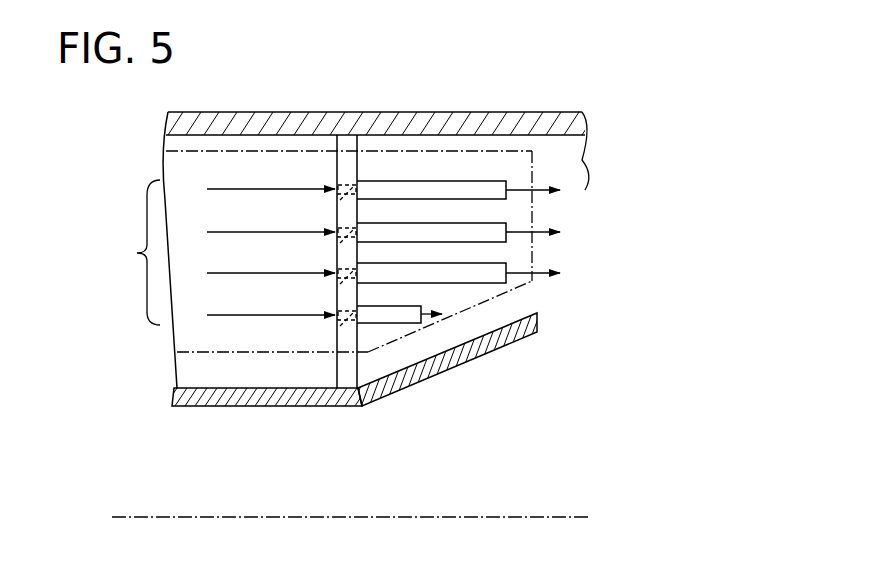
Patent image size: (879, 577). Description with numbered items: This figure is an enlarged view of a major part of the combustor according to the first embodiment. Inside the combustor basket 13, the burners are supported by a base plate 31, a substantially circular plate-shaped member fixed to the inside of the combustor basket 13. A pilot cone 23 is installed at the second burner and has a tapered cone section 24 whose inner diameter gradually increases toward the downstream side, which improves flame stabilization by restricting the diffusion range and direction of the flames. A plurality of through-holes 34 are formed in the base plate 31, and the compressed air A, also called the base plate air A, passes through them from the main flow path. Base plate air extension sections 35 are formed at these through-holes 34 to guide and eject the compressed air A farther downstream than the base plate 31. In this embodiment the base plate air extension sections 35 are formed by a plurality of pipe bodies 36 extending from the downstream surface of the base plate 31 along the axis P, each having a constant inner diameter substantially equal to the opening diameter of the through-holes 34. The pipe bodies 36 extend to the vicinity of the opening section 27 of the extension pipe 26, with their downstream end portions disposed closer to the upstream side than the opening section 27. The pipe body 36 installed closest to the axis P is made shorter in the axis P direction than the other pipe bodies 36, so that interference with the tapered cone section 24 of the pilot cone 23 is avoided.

The combustor basket 13 is at (390, 125).
The pilot cone 23 is at (243, 406).
The tapered cone section 24 is at (420, 373).
The extension pipe 26 is at (523, 285).
The opening section 27 is at (533, 258).
The base plate 31 is at (345, 362).
The through-holes 34 is at (283, 334).
The base plate air extension sections 35 is at (537, 267).
The pipe bodies 36 is at (500, 181).
The compressed air A is at (138, 252).
The axis P is at (152, 515).